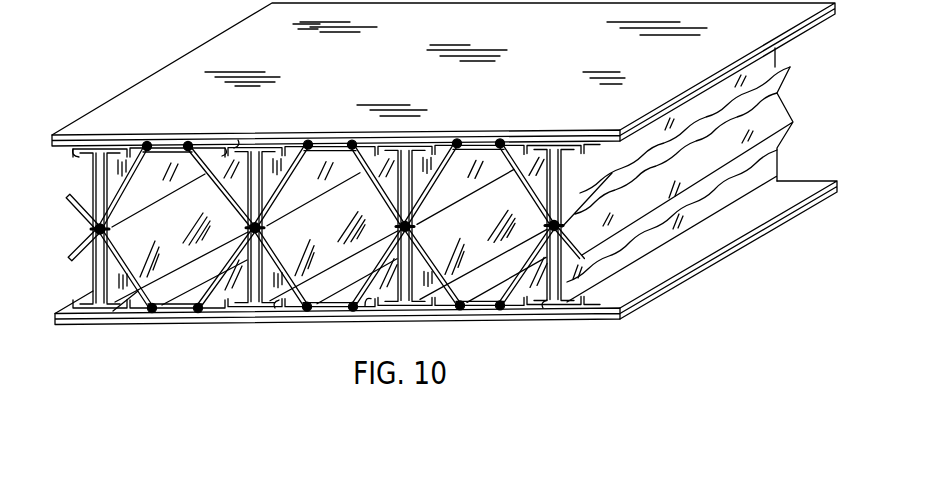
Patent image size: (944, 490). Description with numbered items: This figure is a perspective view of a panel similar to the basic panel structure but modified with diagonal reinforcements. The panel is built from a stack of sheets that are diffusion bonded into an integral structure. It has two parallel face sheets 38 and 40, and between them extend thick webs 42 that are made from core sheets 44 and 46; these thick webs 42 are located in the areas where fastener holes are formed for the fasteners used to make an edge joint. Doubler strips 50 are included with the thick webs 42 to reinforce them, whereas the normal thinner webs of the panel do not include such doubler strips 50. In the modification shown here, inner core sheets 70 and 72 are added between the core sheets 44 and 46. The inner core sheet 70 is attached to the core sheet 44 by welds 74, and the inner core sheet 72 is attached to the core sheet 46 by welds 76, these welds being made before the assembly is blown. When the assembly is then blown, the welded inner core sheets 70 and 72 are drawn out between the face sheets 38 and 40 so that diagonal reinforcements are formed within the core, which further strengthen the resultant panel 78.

The face sheet 38 is at (440, 218).
The face sheet 40 is at (580, 312).
The thick web 42 is at (130, 143).
The core sheet 44 is at (480, 137).
The core sheet 46 is at (372, 305).
The doubler strip 50 is at (82, 153).
The inner core sheet 70 is at (520, 153).
The inner core sheet 72 is at (155, 287).
The weld 74 is at (149, 145).
The weld 76 is at (138, 310).
The panel 78 is at (784, 26).